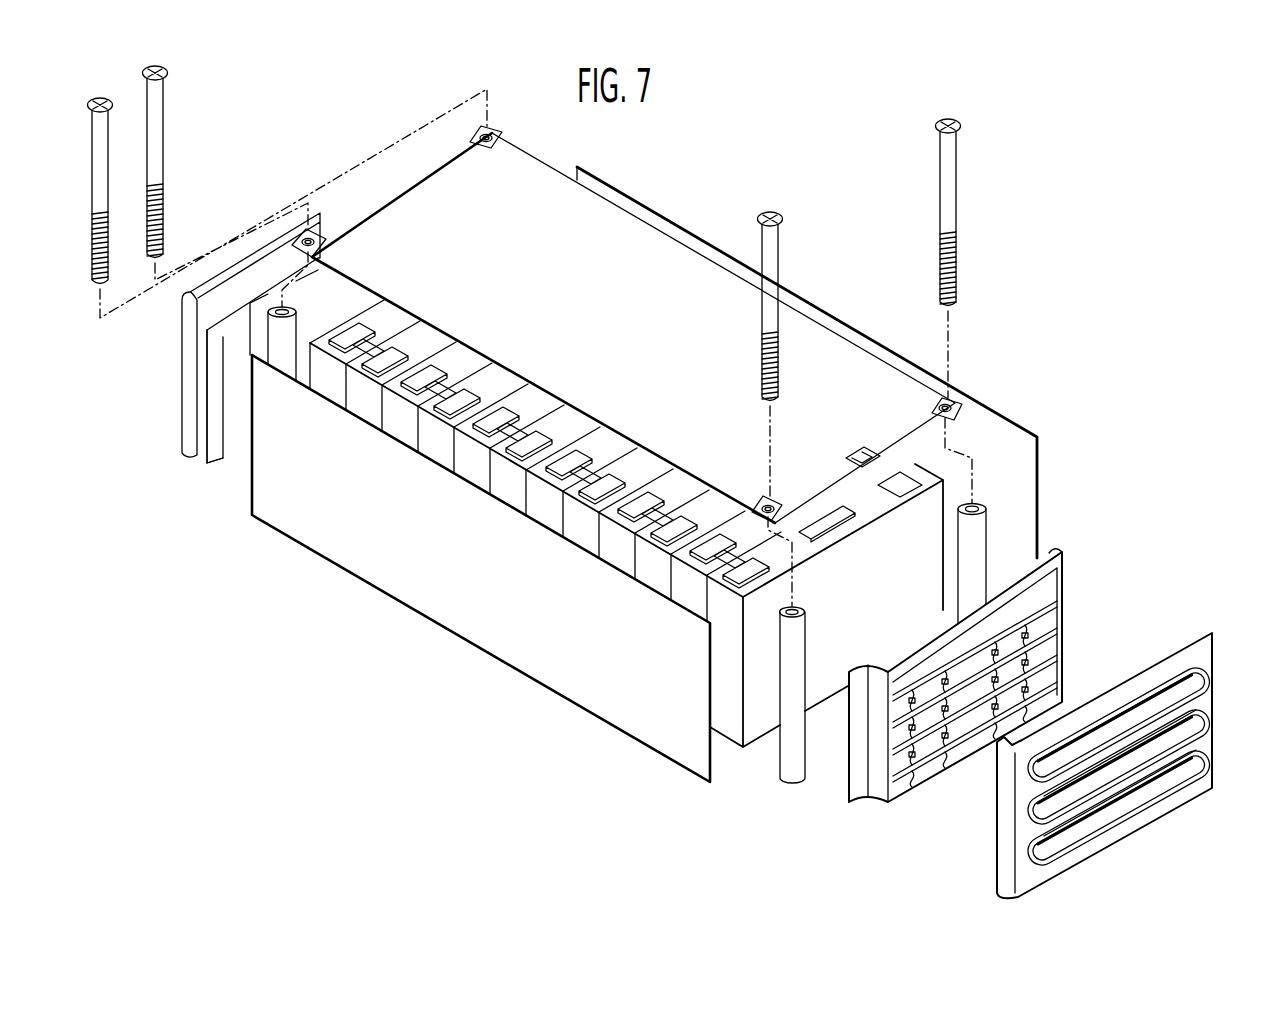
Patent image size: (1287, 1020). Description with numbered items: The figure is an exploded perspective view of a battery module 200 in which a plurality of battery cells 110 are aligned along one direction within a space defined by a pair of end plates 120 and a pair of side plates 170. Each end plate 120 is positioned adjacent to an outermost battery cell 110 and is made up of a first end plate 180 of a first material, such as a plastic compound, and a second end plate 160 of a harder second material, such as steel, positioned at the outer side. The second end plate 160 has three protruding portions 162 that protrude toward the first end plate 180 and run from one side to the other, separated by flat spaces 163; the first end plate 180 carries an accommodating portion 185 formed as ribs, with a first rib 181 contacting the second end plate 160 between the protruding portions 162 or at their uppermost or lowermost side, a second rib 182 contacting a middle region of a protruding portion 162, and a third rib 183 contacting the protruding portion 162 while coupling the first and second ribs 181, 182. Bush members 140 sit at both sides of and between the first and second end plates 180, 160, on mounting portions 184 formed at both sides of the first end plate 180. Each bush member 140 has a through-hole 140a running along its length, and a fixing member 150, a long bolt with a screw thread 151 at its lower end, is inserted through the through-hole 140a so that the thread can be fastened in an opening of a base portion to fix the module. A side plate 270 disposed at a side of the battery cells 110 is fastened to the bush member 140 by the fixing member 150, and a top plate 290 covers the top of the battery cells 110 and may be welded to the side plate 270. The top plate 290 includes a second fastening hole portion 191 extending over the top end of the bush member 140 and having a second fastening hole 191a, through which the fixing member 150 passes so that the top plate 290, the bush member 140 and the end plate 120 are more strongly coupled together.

The battery cells 110 is at (470, 468).
The end plate 120 is at (1228, 556).
The bush member 140 is at (978, 540).
The through-hole 140a is at (976, 510).
The fixing member 150 is at (952, 152).
The screw thread 151 is at (952, 247).
The second end plate 160 is at (242, 264).
The protruding portion 162 is at (1040, 822).
The spaces 163 is at (1040, 848).
The side plate 170 is at (836, 318).
The first end plate 180 is at (221, 468).
The first rib 181 is at (1060, 697).
The second rib 182 is at (1048, 692).
The third rib 183 is at (1050, 700).
The mounting portion 184 is at (1062, 560).
The accommodating portion 185 is at (1146, 590).
The second fastening hole portion 191 is at (963, 412).
The second fastening hole 191a is at (950, 404).
The battery module 200 is at (856, 122).
The side plate 270 is at (468, 628).
The top plate 290 is at (536, 170).